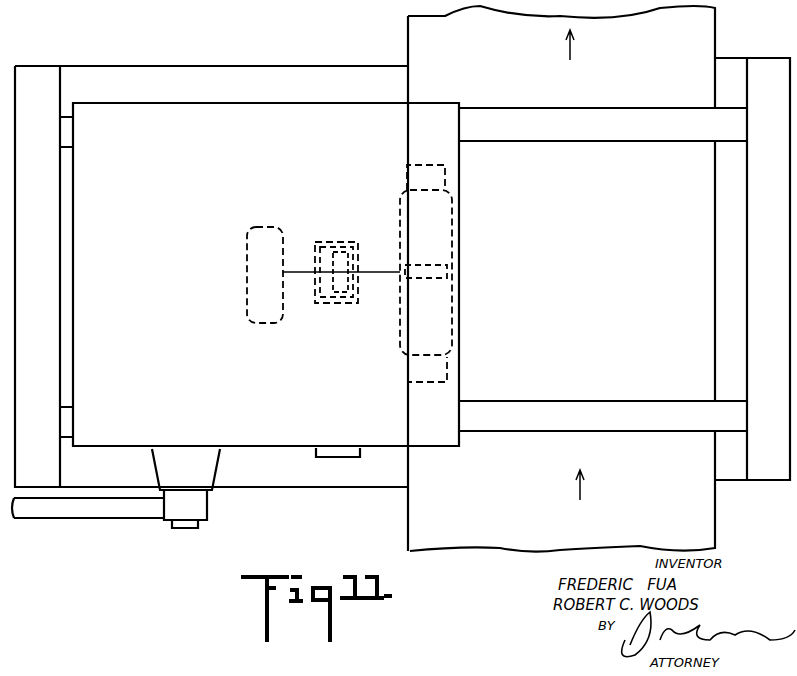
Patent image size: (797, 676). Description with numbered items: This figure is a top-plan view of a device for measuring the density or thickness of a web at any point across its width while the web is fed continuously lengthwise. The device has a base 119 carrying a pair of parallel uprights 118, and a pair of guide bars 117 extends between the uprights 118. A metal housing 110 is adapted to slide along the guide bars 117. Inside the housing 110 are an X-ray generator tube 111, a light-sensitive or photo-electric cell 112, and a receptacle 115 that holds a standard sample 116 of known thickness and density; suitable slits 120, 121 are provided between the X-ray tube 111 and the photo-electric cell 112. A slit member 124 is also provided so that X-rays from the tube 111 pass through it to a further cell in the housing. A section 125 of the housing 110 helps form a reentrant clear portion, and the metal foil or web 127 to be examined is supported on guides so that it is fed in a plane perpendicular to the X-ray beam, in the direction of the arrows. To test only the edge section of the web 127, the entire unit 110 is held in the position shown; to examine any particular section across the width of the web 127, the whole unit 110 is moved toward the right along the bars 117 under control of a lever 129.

The metal housing 110 is at (476, 214).
The X-ray generator tube 111 is at (412, 338).
The photo-electric cell 112 is at (262, 226).
The receptacle 115 is at (340, 247).
The standard sample 116 is at (345, 300).
The guide bars 117 is at (617, 128).
The uprights 118 is at (45, 204).
The base 119 is at (288, 78).
The slit 120 is at (362, 262).
The slit 121 is at (313, 270).
The slit member 124 is at (450, 268).
The housing section 125 is at (160, 117).
The web 127 is at (690, 30).
The lever 129 is at (68, 508).